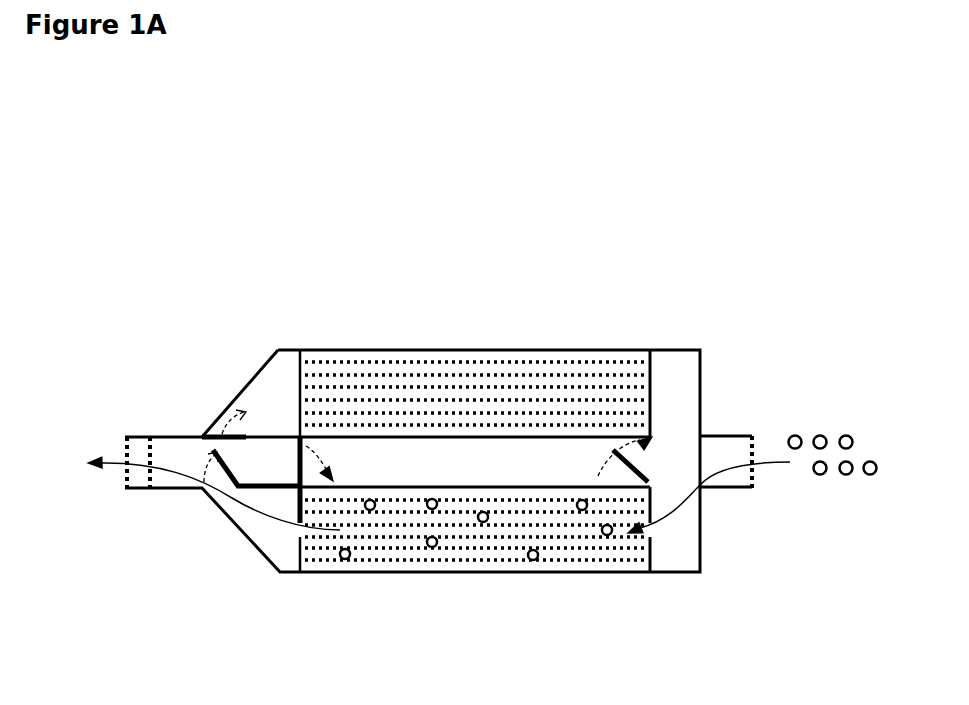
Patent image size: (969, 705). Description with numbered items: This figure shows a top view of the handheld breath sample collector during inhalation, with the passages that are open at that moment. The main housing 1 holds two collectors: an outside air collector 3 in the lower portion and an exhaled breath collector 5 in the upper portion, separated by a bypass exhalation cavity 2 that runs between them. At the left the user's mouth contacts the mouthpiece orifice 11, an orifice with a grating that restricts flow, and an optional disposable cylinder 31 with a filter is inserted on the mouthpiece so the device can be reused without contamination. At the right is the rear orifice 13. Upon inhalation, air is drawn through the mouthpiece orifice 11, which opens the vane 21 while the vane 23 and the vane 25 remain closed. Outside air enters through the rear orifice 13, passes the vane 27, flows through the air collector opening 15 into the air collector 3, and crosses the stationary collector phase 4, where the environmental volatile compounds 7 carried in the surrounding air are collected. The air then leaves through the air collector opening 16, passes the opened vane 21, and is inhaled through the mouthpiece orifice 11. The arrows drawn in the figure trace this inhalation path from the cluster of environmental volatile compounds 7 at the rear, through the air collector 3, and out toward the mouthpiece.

The main housing 1 is at (612, 346).
The bypass exhalation cavity 2 is at (480, 450).
The outside air collector 3 is at (580, 565).
The stationary collector phase 4 is at (444, 565).
The exhaled breath collector 5 is at (540, 358).
The environmental volatile compounds 7 is at (832, 500).
The mouthpiece orifice 11 is at (148, 430).
The rear orifice 13 is at (755, 430).
The air collector opening 15 is at (663, 556).
The air collector opening 16 is at (288, 548).
The vane 21 is at (245, 456).
The vane 23 is at (290, 446).
The vane 25 is at (258, 412).
The vane 27 is at (658, 455).
The disposable cylinder 31 is at (121, 430).